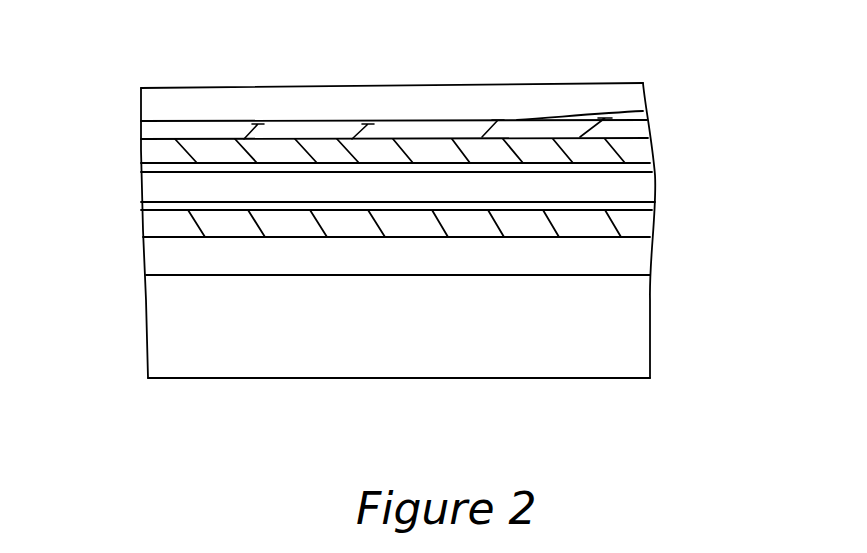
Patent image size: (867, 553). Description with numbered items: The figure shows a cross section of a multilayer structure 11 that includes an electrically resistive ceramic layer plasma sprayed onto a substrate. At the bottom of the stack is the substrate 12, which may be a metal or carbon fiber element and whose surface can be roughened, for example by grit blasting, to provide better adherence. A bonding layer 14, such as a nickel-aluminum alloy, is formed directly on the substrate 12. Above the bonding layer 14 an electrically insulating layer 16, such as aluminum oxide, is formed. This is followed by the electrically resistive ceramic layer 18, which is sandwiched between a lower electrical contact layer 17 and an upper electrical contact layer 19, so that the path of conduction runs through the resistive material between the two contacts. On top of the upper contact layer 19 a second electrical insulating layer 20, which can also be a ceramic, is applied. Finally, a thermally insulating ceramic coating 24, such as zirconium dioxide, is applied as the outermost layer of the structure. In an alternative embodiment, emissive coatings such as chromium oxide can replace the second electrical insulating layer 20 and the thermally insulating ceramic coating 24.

The multilayer structure 11 is at (742, 160).
The substrate 12 is at (448, 341).
The bonding layer 14 is at (143, 255).
The electrically insulating layer 16 is at (141, 218).
The electrical contact layer 17 is at (647, 207).
The electrically resistive ceramic layer 18 is at (141, 182).
The electrical contact layer 19 is at (655, 167).
The second electrical insulating layer 20 is at (141, 145).
The thermally insulating ceramic coating 24 is at (141, 90).